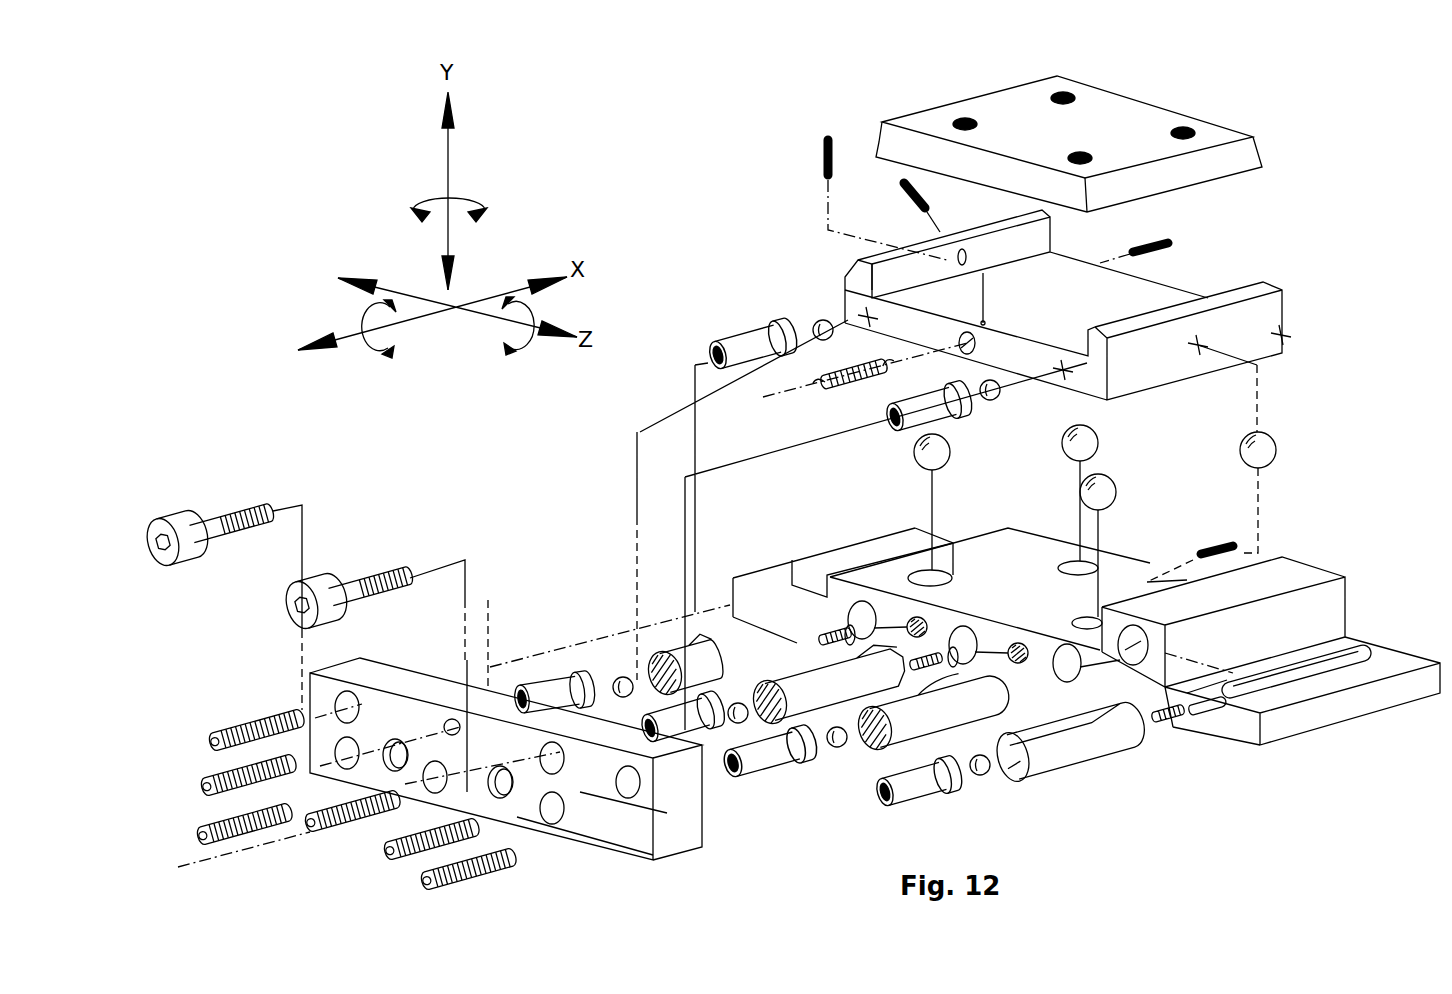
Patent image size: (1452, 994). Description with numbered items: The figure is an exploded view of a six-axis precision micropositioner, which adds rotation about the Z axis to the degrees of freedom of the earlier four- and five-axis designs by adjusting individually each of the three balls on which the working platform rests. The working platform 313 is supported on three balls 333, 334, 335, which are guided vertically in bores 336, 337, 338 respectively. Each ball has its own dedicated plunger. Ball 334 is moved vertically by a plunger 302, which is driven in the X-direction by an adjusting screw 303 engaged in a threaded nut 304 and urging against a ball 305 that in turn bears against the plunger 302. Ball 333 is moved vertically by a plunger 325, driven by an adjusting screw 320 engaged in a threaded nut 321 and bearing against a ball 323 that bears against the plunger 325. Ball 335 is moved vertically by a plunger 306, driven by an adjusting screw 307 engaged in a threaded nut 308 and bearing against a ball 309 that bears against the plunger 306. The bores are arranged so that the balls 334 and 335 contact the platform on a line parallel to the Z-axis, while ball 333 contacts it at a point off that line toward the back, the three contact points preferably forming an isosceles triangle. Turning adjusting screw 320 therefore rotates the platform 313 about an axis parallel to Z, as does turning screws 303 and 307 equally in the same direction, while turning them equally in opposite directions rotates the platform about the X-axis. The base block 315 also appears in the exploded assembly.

The plunger 302 is at (740, 703).
The adjusting screw 303 is at (192, 795).
The threaded nut 304 is at (575, 673).
The ball 305 is at (623, 677).
The plunger 306 is at (985, 714).
The adjusting screw 307 is at (393, 863).
The threaded nut 308 is at (863, 797).
The ball 309 is at (837, 750).
The working platform 313 is at (1280, 336).
The base block 315 is at (1330, 727).
The adjusting screw 320 is at (242, 840).
The threaded nut 321 is at (672, 717).
The ball 323 is at (732, 700).
The plunger 325 is at (793, 680).
The ball 333 is at (1090, 433).
The ball 334 is at (928, 470).
The ball 335 is at (1103, 480).
The bore 336 is at (1085, 565).
The bore 337 is at (925, 575).
The bore 338 is at (1083, 620).